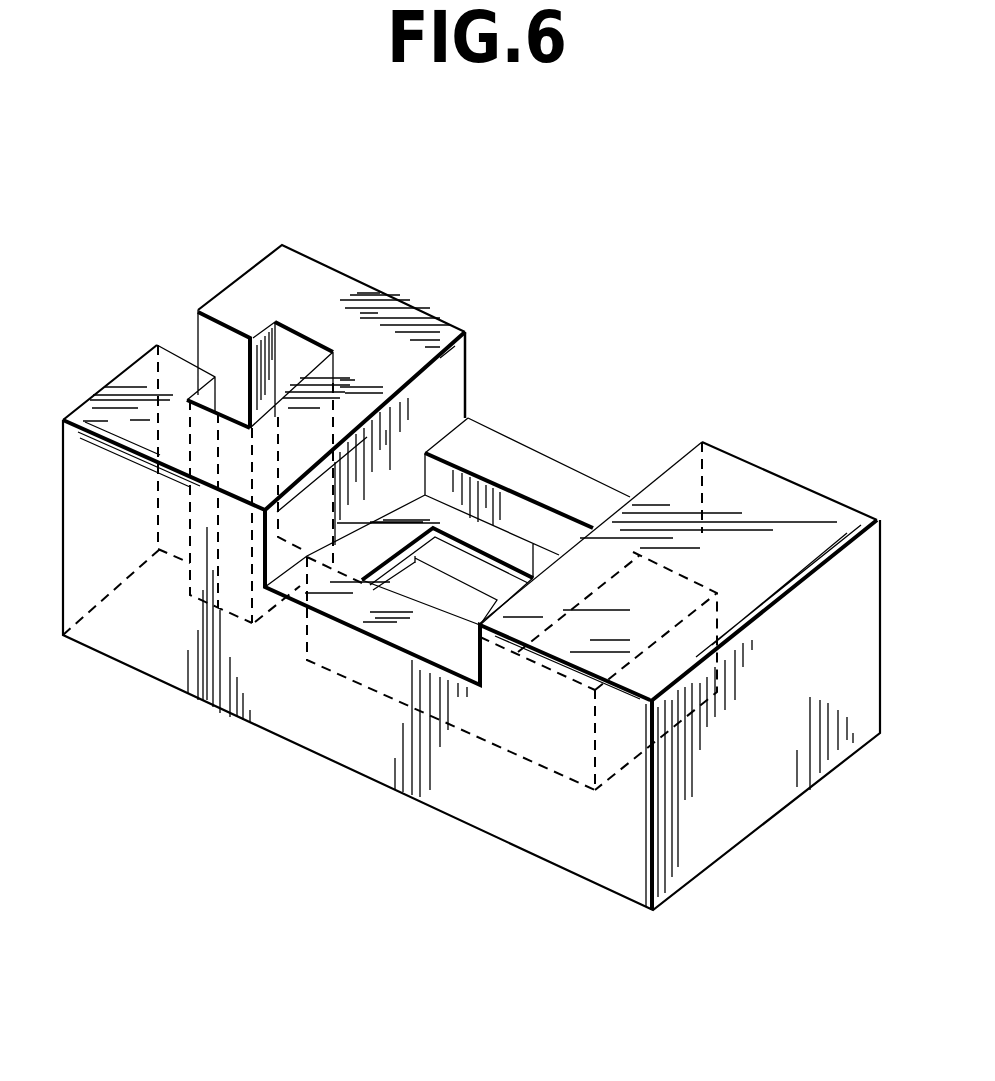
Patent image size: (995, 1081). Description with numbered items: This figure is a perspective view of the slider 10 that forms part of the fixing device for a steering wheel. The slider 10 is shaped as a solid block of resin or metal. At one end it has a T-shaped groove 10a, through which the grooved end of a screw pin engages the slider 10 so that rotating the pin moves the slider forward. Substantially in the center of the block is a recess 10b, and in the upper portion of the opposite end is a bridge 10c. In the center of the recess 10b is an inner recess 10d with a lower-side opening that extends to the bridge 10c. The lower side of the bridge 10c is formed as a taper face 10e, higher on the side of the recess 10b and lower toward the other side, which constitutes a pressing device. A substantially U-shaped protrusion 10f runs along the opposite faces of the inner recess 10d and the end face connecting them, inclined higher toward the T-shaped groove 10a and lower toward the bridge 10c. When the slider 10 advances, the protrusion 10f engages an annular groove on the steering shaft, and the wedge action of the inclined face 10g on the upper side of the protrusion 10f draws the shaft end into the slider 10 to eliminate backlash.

The slider 10 is at (148, 652).
The T-shaped groove 10a is at (297, 342).
The recess 10b is at (483, 422).
The bridge 10c is at (770, 497).
The inner recess 10d is at (493, 723).
The taper face 10e is at (657, 613).
The protrusion 10f is at (462, 548).
The inclined face 10g is at (507, 540).